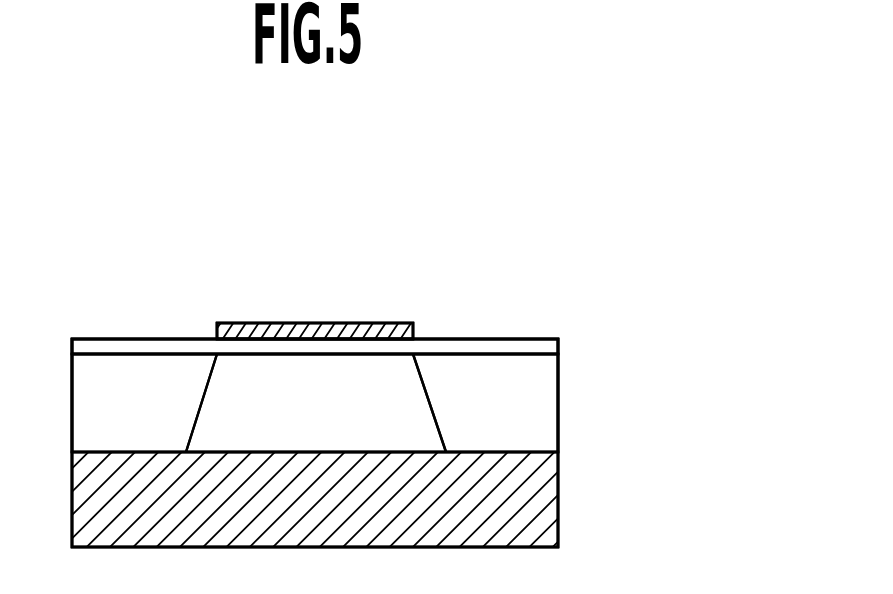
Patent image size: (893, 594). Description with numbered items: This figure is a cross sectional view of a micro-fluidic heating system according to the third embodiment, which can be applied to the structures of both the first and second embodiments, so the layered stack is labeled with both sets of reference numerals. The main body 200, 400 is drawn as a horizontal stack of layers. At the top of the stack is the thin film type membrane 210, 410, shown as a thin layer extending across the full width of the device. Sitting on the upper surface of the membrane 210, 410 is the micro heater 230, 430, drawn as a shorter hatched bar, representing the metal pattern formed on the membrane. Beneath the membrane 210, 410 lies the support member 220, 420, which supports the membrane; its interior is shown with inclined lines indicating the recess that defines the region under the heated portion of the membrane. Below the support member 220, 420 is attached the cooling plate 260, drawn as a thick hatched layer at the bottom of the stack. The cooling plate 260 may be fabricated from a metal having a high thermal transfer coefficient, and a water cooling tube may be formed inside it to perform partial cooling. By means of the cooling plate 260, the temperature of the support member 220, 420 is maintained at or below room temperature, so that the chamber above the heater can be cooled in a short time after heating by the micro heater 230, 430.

The main body 200 is at (630, 375).
The main body 400 is at (445, 435).
The membrane 210 is at (545, 345).
The membrane 410 is at (387, 323).
The support member 220 is at (542, 422).
The support member 420 is at (387, 403).
The micro heater 230 is at (355, 332).
The micro heaters 430 is at (332, 280).
The cooling plate 260 is at (545, 503).